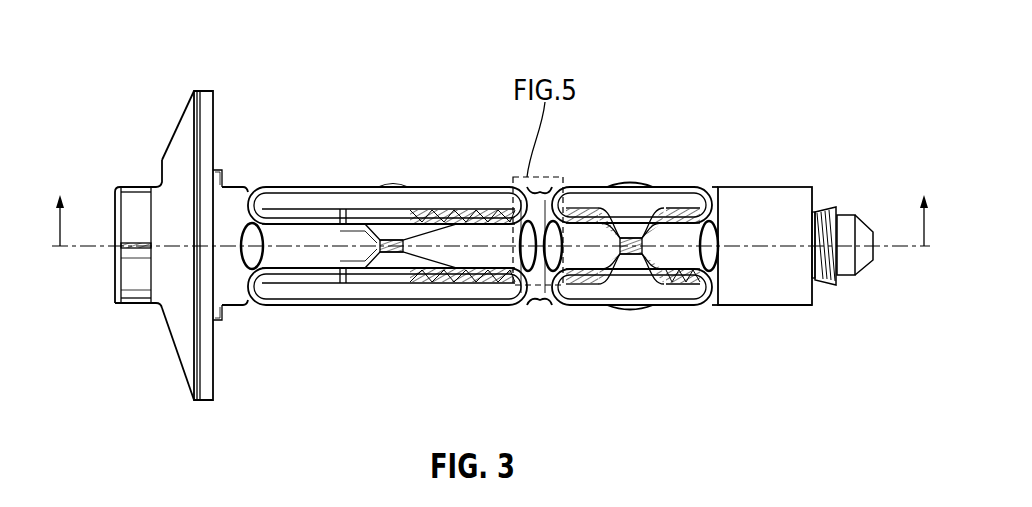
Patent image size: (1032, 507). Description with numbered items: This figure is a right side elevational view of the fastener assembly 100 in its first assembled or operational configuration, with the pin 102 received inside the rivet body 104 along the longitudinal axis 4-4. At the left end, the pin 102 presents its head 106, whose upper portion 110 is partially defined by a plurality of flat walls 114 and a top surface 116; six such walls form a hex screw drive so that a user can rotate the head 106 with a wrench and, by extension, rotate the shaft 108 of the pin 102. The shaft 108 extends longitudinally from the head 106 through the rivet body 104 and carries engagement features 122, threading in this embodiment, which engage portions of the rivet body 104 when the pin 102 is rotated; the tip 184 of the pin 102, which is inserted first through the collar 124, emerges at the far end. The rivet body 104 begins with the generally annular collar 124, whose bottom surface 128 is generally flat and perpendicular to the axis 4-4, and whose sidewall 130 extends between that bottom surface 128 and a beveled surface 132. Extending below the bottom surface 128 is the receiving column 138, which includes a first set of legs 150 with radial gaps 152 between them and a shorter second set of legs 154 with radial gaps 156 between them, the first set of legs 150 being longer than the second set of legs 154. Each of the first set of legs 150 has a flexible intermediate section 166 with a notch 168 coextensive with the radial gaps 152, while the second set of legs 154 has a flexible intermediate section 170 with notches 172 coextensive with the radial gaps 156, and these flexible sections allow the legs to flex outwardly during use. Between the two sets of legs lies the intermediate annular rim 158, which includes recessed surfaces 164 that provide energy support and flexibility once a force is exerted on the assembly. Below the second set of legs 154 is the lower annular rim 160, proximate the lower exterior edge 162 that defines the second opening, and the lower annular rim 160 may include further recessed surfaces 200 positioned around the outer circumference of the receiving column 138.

The fastener assembly 100 is at (164, 40).
The axis 4- 4 is at (493, 206).
The pin 102 is at (130, 207).
The upper portion 110 is at (147, 203).
The flat walls 114 is at (128, 264).
The top surface 116 is at (118, 293).
The head 106 is at (137, 288).
The collar 124 is at (207, 91).
The beveled surface 132 is at (170, 353).
The sidewall 130 is at (204, 400).
The bottom surface 128 is at (214, 372).
The rivet body 104 is at (477, 188).
The first set of legs 150 is at (328, 189).
The radial gaps 152 is at (320, 290).
The flexible intermediate section 166 is at (393, 190).
The notch 168 is at (400, 226).
The recessed surfaces 200 is at (252, 307).
The recessed surfaces 164 is at (527, 302).
The intermediate annular rim 158 is at (547, 303).
The second set of legs 154 is at (588, 197).
The engagement features 122 is at (641, 290).
The notches 172 is at (641, 212).
The flexible intermediate section 170 is at (637, 226).
The radial gaps 156 is at (676, 292).
The lower annular rim 160 is at (780, 197).
The receiving column 138 is at (770, 303).
The lower exterior edge 162 is at (815, 189).
The shaft 108 is at (845, 268).
The tip 184 is at (877, 237).